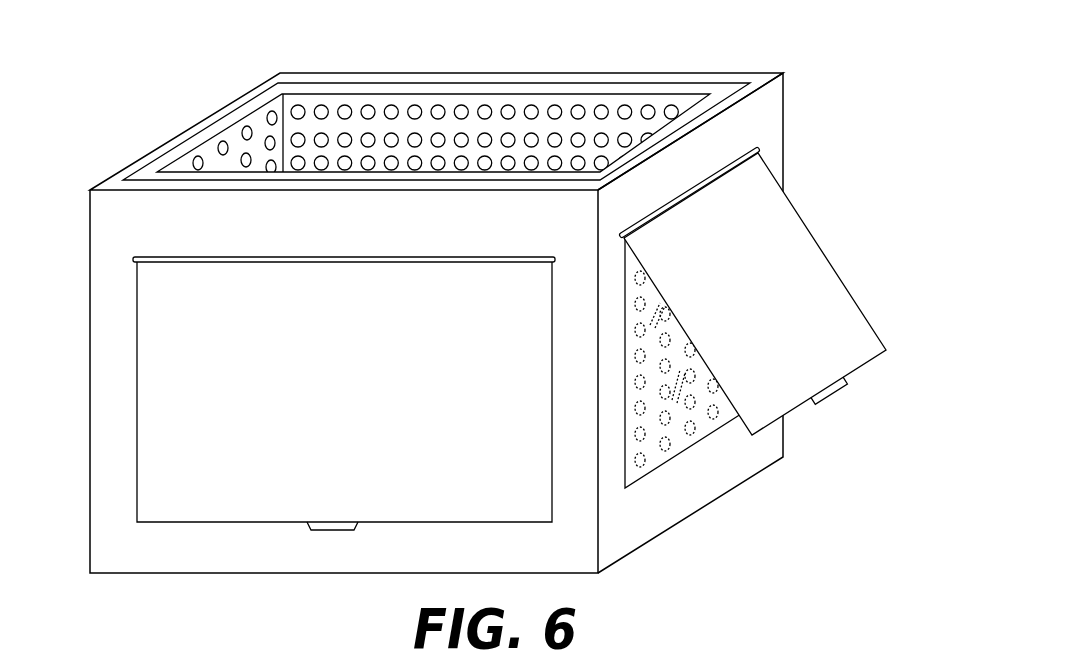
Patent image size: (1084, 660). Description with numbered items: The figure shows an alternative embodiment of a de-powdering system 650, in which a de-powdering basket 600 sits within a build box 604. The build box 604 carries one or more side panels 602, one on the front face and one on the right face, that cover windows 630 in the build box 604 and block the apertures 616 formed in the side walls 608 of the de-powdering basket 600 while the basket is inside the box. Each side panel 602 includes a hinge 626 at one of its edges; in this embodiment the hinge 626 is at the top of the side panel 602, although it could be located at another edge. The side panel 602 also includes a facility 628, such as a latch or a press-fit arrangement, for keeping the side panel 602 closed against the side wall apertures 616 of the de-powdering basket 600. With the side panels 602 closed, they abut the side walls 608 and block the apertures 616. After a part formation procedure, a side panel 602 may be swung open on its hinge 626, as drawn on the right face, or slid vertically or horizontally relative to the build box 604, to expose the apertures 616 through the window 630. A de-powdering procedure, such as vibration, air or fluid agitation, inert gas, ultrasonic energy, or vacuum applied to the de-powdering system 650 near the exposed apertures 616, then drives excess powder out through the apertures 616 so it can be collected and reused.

The de-powdering basket 600 is at (422, 85).
The side panel 602 is at (830, 288).
The build box 604 is at (88, 432).
The side wall 608 is at (215, 128).
The aperture 616 is at (508, 105).
The hinge 626 is at (755, 147).
The facility 628 is at (837, 389).
The window 630 is at (635, 483).
The de-powdering system 650 is at (863, 72).